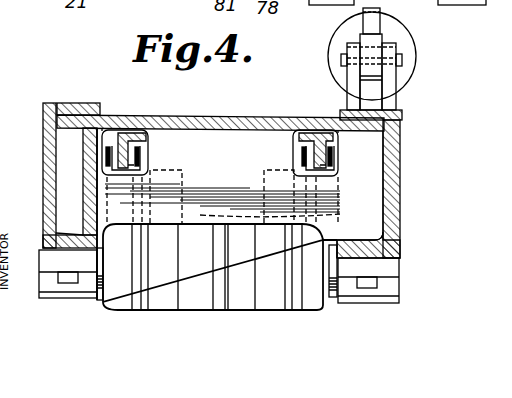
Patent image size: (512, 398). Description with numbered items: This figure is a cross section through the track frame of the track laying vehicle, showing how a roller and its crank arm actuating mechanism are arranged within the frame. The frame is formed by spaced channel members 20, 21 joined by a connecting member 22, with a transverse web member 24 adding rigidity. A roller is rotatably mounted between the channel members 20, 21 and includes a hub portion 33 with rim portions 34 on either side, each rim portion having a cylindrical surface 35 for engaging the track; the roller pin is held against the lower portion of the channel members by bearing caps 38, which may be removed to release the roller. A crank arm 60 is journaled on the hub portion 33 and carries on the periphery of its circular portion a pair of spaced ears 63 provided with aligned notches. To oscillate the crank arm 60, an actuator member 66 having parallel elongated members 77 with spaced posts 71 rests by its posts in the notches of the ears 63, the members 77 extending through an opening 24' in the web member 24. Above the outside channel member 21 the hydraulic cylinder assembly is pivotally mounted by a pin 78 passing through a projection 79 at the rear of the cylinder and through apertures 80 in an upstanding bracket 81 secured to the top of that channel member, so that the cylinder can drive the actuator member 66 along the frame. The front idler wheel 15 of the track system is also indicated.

The front idler wheel 15 is at (420, 46).
The channel member 20 is at (74, 103).
The channel member 21 is at (401, 130).
The connecting member 22 is at (204, 119).
The transverse web member 24 is at (264, 214).
The opening 24' is at (273, 126).
The hub portion 33 is at (220, 267).
The rim portion 34 is at (192, 196).
The cylindrical surface 35 is at (172, 168).
The bearing cap 38 is at (58, 290).
The crank arm 60 is at (117, 285).
The ear 63 is at (104, 158).
The actuator member 66 is at (124, 132).
The post 71 is at (100, 170).
The elongated member 77 is at (95, 140).
The pin 78 is at (398, 63).
The projection 79 is at (378, 41).
The aperture 80 is at (348, 51).
The upstanding bracket 81 is at (352, 71).